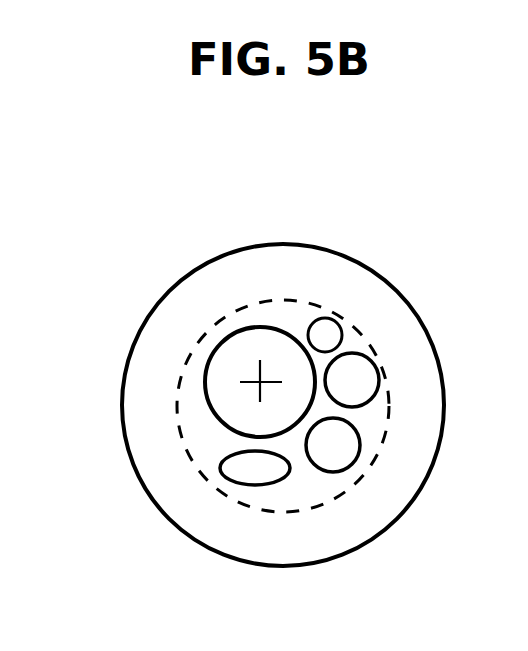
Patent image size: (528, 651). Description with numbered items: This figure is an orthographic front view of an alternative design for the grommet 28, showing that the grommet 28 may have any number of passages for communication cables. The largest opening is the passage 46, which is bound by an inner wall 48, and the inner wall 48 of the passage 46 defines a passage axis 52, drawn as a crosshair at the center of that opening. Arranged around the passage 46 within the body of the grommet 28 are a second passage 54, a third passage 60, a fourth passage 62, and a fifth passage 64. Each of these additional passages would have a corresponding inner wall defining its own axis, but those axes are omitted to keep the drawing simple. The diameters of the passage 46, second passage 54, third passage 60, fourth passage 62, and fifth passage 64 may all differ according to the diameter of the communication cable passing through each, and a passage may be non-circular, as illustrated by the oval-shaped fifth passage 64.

The grommet 28 is at (125, 356).
The passage 46 is at (240, 403).
The inner wall 48 is at (228, 366).
The passage axis 52 is at (270, 368).
The fourth passage 62 is at (340, 327).
The third passage 60 is at (371, 376).
The second passage 54 is at (353, 459).
The fifth passage 64 is at (248, 470).